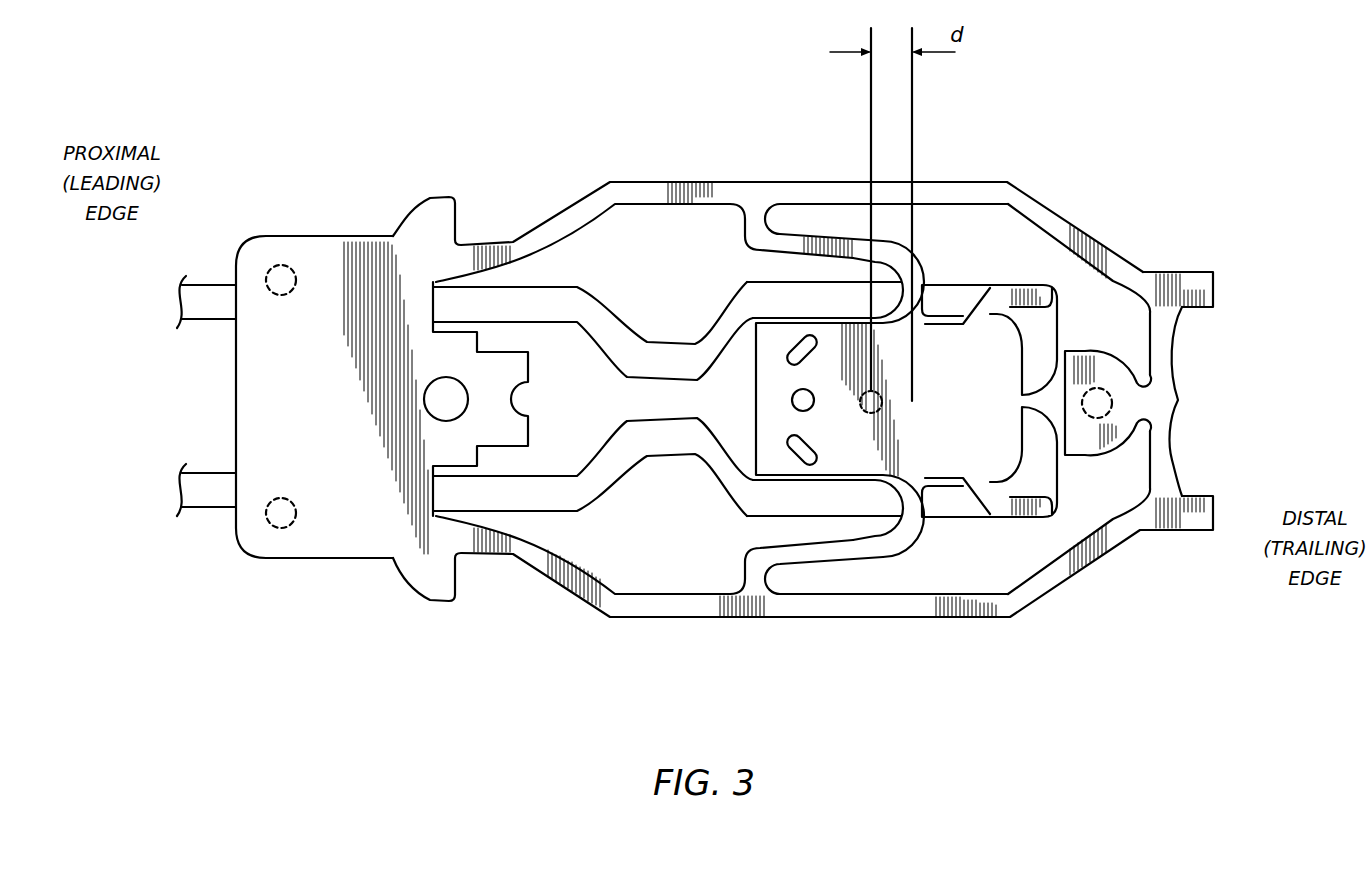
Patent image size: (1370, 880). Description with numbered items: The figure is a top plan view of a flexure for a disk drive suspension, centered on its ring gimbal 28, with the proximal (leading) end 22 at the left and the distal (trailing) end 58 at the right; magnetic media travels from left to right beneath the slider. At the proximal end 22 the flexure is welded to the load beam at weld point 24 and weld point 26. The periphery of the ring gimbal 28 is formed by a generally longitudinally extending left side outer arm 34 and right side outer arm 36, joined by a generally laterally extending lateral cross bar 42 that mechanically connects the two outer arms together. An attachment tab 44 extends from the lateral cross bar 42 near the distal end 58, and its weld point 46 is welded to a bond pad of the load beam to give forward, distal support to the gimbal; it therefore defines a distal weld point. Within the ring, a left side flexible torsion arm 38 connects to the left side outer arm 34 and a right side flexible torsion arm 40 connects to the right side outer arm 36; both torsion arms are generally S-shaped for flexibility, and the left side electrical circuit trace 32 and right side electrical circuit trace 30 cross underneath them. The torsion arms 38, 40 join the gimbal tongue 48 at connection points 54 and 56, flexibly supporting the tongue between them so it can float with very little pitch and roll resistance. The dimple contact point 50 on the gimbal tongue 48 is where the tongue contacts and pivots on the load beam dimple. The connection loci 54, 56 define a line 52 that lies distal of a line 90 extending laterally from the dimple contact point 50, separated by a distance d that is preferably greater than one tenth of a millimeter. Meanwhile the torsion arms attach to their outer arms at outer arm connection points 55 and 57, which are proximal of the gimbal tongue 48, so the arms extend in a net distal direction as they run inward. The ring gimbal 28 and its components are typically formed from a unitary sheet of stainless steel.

The proximal end 22 is at (330, 285).
The weld point 24 is at (281, 264).
The weld point 26 is at (281, 529).
The ring gimbal 28 is at (557, 169).
The right side electrical circuit trace 30 is at (223, 507).
The left side electrical circuit trace 32 is at (218, 282).
The left side outer arm 34 is at (638, 196).
The right side outer arm 36 is at (644, 613).
The left side flexible torsion arm 38 is at (860, 252).
The right side flexible torsion arm 40 is at (835, 557).
The lateral cross bar 42 is at (1158, 435).
The attachment tab 44 is at (1083, 358).
The weld point 46 is at (1112, 385).
The gimbal tongue 48 is at (943, 443).
The dimple contact point 50 is at (868, 412).
The line 52 is at (912, 98).
The connection point 54 is at (917, 323).
The outer arm connection point 55 is at (758, 212).
The connection point 56 is at (243, 393).
The outer arm connection point 57 is at (757, 580).
The distal end 58 is at (1165, 398).
The line 90 is at (871, 112).